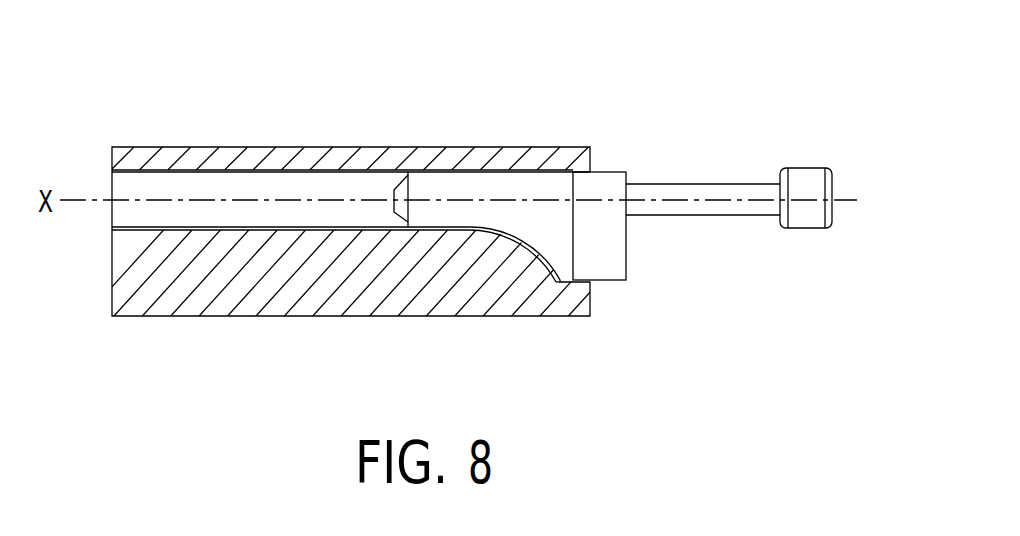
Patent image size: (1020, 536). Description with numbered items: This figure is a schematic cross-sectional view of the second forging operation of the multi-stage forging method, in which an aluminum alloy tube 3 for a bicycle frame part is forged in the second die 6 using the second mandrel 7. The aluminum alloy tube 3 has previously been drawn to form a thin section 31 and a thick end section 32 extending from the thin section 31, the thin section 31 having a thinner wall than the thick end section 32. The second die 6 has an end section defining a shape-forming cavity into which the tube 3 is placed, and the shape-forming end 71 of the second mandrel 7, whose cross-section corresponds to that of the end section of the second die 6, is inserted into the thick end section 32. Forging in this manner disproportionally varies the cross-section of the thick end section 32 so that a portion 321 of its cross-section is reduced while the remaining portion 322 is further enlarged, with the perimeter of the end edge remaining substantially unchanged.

The aluminum alloy tube 3 is at (217, 156).
The second die 6 is at (290, 146).
The thin section 31 is at (247, 232).
The thick end section 32 is at (497, 236).
The portion of the cross-section 321 is at (512, 178).
The remaining portion of the cross-section 322 is at (565, 273).
The second mandrel 7 is at (620, 170).
The shape-forming end 71 is at (628, 268).